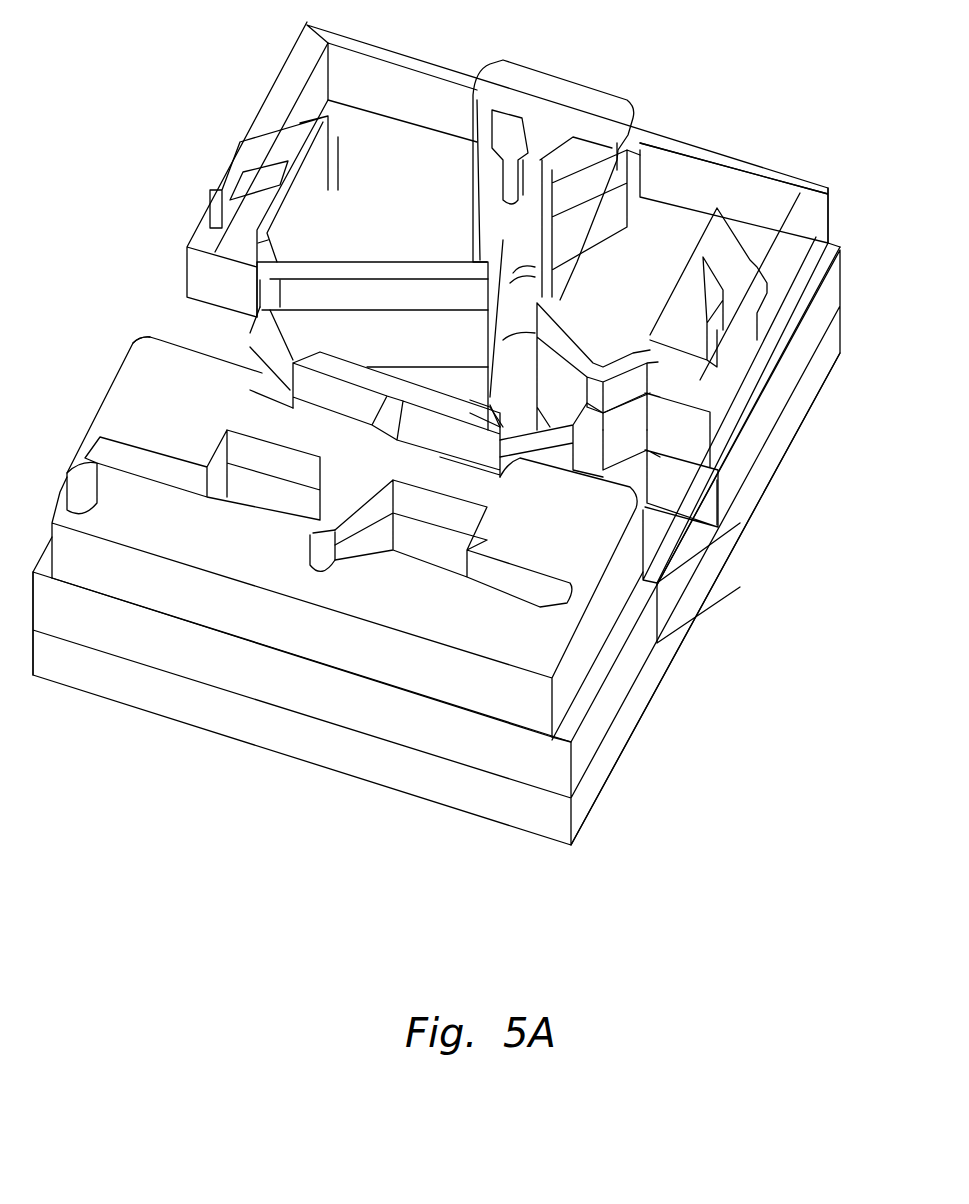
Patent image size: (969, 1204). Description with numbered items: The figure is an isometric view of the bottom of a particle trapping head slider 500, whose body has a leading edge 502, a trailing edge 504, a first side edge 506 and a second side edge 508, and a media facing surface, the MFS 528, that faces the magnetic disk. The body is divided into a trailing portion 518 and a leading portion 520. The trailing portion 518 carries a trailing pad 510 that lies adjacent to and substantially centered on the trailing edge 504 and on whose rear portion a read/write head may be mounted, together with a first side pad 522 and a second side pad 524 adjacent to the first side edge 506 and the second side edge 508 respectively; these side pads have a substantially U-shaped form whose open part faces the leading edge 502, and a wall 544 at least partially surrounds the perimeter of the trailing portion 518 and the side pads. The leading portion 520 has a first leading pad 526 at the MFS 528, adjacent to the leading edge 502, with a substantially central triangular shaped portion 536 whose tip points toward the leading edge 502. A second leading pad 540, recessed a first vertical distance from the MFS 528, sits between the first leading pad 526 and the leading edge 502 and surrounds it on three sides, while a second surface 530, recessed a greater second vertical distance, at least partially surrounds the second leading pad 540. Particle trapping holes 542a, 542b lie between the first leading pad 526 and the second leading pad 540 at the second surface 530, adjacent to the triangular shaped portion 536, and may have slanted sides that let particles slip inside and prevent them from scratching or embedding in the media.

The particle trapping head slider 500 is at (143, 178).
The leading edge 502 is at (205, 768).
The trailing edge 504 is at (730, 118).
The first side edge 506 is at (163, 265).
The second side edge 508 is at (740, 585).
The trailing pad 510 is at (552, 98).
The trailing portion 518 is at (802, 460).
The leading portion 520 is at (645, 748).
The first side pad 522 is at (270, 140).
The second side pad 524 is at (718, 243).
The first leading pad 526 is at (123, 373).
The MFS 528 is at (140, 350).
The second surface 530 is at (418, 219).
The triangular shaped portion 536 is at (308, 540).
The second leading pad 540 is at (392, 596).
The particle trapping hole 542a is at (250, 500).
The particle trapping hole 542b is at (437, 555).
The wall 544 is at (810, 193).